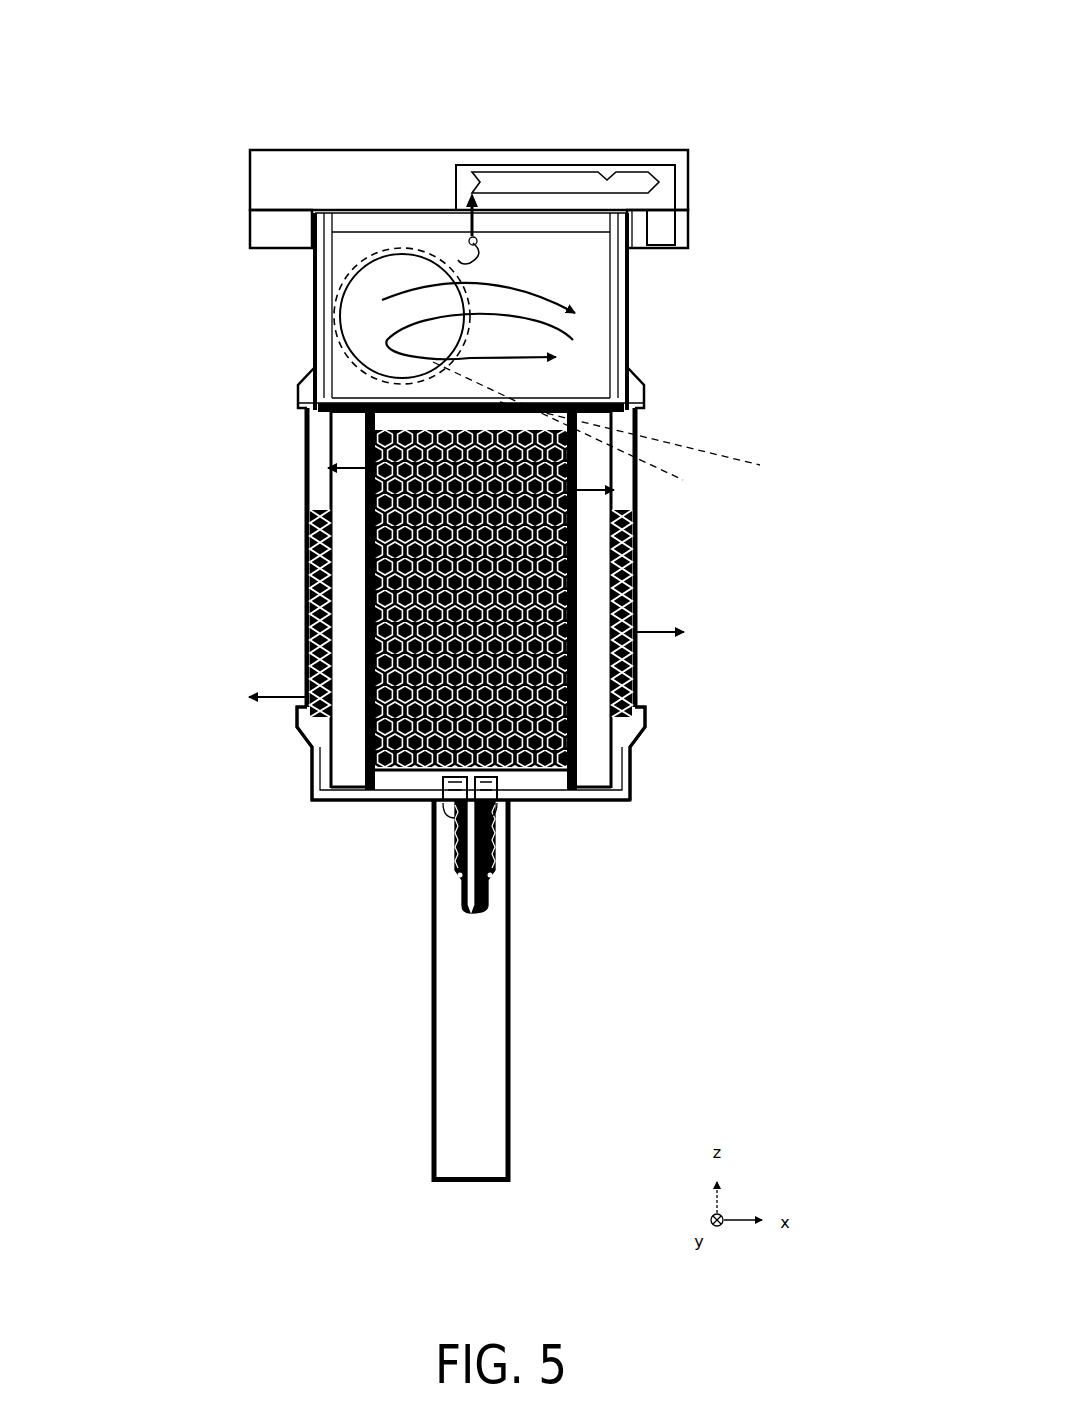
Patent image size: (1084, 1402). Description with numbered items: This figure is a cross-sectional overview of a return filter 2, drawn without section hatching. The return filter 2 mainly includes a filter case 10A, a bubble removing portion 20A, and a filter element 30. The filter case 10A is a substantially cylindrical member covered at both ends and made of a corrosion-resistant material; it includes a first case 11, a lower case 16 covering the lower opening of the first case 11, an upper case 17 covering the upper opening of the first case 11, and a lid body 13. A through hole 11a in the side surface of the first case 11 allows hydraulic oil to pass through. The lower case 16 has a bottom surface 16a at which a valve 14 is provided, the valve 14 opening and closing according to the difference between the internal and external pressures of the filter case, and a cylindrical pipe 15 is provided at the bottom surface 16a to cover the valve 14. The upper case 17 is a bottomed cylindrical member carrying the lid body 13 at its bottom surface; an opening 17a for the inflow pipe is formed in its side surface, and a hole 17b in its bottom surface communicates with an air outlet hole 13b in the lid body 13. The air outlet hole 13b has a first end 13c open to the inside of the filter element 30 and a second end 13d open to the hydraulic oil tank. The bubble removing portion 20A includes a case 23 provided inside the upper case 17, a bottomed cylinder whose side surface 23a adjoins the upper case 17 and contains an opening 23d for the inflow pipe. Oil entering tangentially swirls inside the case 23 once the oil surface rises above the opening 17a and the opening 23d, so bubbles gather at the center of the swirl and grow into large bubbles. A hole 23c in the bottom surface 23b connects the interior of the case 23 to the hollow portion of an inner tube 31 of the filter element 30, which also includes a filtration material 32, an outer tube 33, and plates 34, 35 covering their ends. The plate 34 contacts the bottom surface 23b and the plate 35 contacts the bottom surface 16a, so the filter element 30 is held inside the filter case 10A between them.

The return filter 2 is at (823, 47).
The lid body 13 is at (690, 152).
The air outlet hole 13b is at (607, 176).
The first end 13c is at (485, 197).
The second end 13d is at (692, 250).
The bubble removing portion 20A is at (814, 256).
The case 23 is at (748, 329).
The side surface 23a is at (614, 307).
The bottom surface 23b is at (642, 384).
The hole 23c is at (523, 396).
The opening 23d is at (475, 262).
The upper case 17 is at (645, 403).
The opening 17a is at (585, 428).
The hole 17b is at (663, 447).
The filter element 30 is at (165, 627).
The inner tube 31 is at (366, 606).
The filtration material 32 is at (358, 540).
The outer tube 33 is at (322, 488).
The plate 34 is at (330, 428).
The plate 35 is at (312, 775).
The first case 11 is at (630, 503).
The through hole 11a is at (628, 598).
The filter case 10A is at (782, 626).
The lower case 16 is at (646, 722).
The bottom surface 16a is at (633, 806).
The valve 14 is at (457, 828).
The cylindrical pipe 15 is at (432, 936).